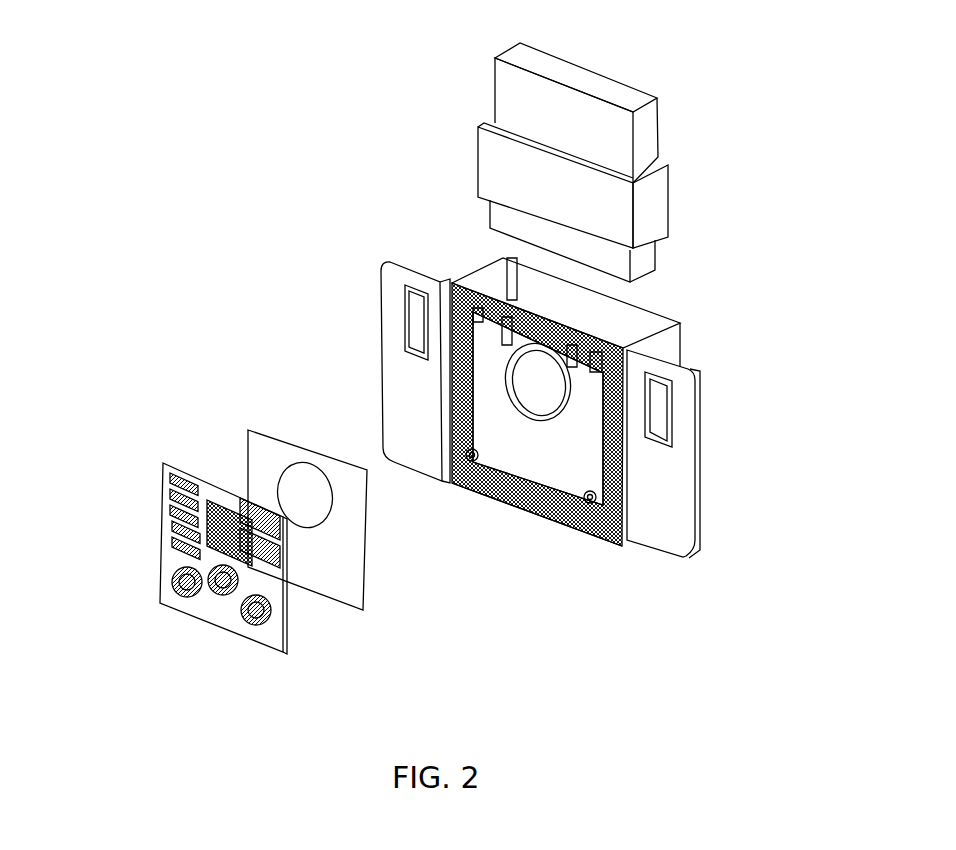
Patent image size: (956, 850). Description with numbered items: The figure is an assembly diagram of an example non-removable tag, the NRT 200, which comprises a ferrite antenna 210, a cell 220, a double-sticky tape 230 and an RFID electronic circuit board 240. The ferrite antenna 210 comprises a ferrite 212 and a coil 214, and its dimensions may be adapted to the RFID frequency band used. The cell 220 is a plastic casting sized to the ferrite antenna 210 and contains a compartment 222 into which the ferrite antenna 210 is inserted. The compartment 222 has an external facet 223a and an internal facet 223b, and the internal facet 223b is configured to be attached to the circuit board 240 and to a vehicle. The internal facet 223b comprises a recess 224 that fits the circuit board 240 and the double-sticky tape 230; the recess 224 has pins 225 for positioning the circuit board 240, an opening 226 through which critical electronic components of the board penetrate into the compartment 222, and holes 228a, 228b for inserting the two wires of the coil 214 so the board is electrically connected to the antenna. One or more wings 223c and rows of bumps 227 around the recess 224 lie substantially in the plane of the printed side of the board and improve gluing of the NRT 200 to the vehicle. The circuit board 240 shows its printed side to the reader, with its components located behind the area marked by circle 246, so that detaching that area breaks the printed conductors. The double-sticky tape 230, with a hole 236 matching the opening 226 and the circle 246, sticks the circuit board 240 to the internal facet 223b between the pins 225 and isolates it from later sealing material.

The NRT 200 is at (86, 112).
The ferrite antenna 210 is at (535, 141).
The ferrite 212 is at (588, 106).
The coil 214 is at (616, 202).
The cell 220 is at (525, 328).
The compartment 222 is at (587, 402).
The external facet 223a is at (622, 303).
The internal facet 223b is at (384, 348).
The wings 223c is at (722, 454).
The recess 224 is at (619, 408).
The pins 225 is at (531, 476).
The opening 226 is at (527, 382).
The bumps 227 is at (537, 524).
The hole 228a is at (378, 340).
The hole 228b is at (491, 281).
The double-sticky tape 230 is at (337, 504).
The hole 236 is at (360, 498).
The RFID-electronic circuit board 240 is at (159, 525).
The circle 246 is at (169, 481).